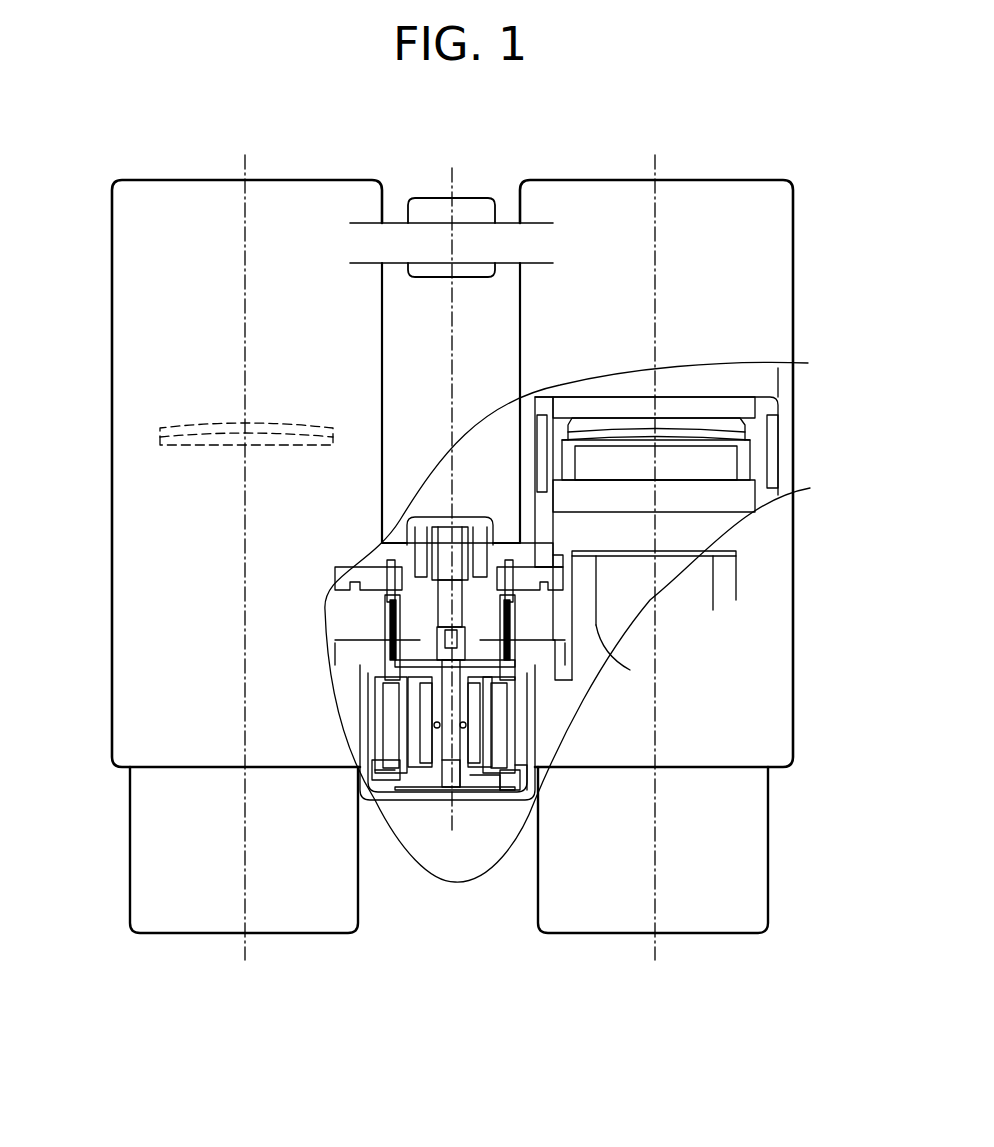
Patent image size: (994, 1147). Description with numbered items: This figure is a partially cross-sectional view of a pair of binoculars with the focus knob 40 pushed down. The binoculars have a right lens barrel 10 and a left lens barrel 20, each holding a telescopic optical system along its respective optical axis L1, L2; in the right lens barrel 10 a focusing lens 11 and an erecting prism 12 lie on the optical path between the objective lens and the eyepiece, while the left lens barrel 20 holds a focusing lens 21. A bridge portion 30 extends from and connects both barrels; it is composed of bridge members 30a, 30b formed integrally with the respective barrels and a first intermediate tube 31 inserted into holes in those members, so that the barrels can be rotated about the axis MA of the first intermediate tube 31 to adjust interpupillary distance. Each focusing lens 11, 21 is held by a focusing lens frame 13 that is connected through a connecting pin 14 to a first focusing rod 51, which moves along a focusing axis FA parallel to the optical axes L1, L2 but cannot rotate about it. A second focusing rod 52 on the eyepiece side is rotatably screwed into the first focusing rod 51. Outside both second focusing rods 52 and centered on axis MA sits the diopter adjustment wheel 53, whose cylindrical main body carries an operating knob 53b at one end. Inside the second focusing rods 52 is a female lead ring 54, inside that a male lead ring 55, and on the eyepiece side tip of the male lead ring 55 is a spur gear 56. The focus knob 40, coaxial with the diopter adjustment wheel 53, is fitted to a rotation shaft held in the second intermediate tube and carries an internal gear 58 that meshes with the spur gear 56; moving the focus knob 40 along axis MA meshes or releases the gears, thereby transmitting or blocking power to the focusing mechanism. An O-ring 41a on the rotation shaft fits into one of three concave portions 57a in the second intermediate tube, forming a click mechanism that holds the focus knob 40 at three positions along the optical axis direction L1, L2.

The right lens barrel 10 is at (795, 287).
The left lens barrel 20 is at (110, 305).
The focusing lens 21 is at (160, 436).
The focusing lens 11 is at (737, 433).
The erecting prism 12 is at (700, 572).
The focusing lens frame 13 is at (765, 500).
The connecting pin 14 is at (340, 578).
The bridge portion 30 is at (277, 582).
The bridge member 30a is at (476, 550).
The bridge member 30b is at (432, 615).
The first intermediate tube 31 is at (345, 596).
The focus knob 40 is at (478, 800).
The O-ring 41a is at (520, 790).
The first focusing rod 51 is at (510, 600).
The second focusing rod 52 is at (530, 685).
The diopter adjustment wheel 53 is at (360, 772).
The operating knob 53b is at (362, 678).
The female lead ring 54 is at (385, 740).
The male lead ring 55 is at (430, 785).
The spur gear 56 is at (472, 790).
The concave portion 57a is at (443, 790).
The internal gear 58 is at (540, 790).
The focusing axis FA is at (500, 728).
The axis of the first intermediate tube MA is at (452, 182).
The optical axis L1 is at (655, 948).
The optical axis L2 is at (245, 948).